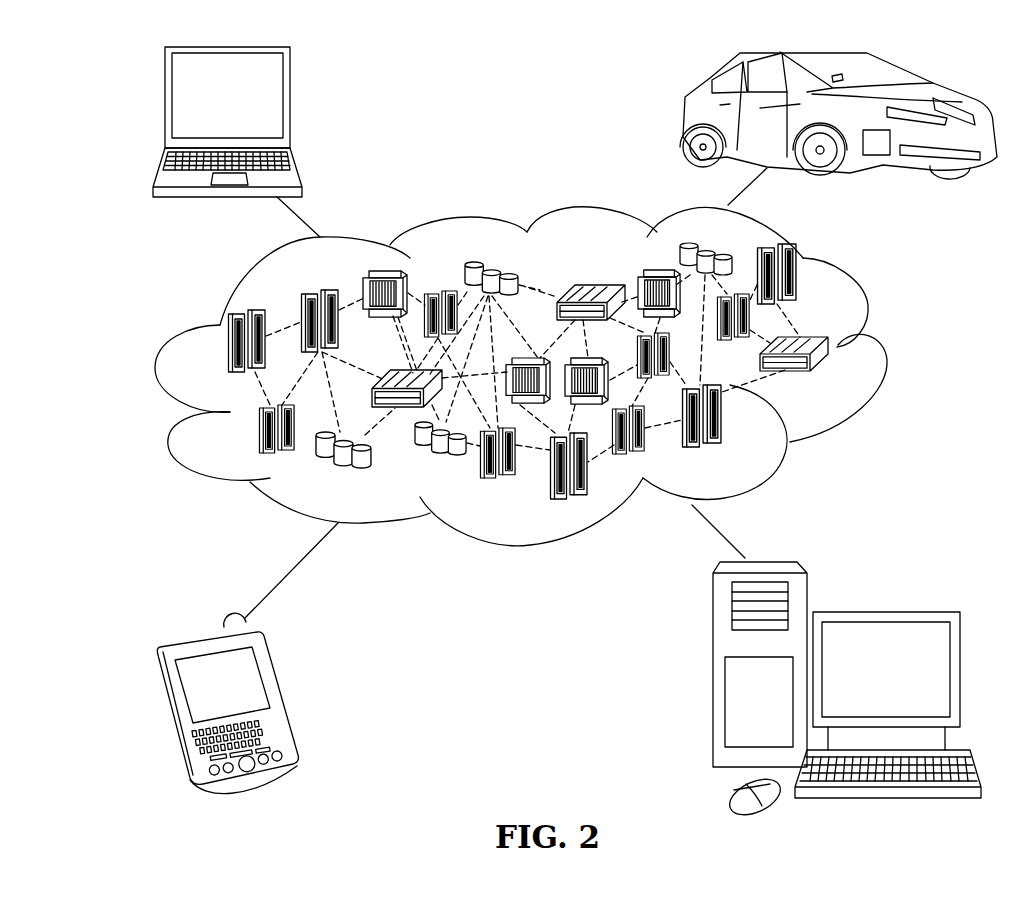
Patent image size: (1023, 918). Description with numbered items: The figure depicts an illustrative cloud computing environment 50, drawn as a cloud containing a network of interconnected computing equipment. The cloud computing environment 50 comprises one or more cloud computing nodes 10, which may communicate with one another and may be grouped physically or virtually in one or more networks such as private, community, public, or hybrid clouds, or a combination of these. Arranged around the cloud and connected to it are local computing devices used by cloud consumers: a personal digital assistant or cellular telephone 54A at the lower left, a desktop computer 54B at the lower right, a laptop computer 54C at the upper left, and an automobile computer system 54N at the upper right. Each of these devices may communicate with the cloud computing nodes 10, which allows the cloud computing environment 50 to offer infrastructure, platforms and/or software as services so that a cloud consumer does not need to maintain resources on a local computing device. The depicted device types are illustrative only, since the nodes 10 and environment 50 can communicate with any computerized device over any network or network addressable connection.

The cloud computing node 10 is at (832, 378).
The cloud computing environment 50 is at (545, 376).
The personal digital assistant or cellular telephone 54A is at (282, 695).
The desktop computer 54B is at (883, 612).
The laptop computer 54C is at (290, 103).
The automobile computer system 54N is at (683, 112).